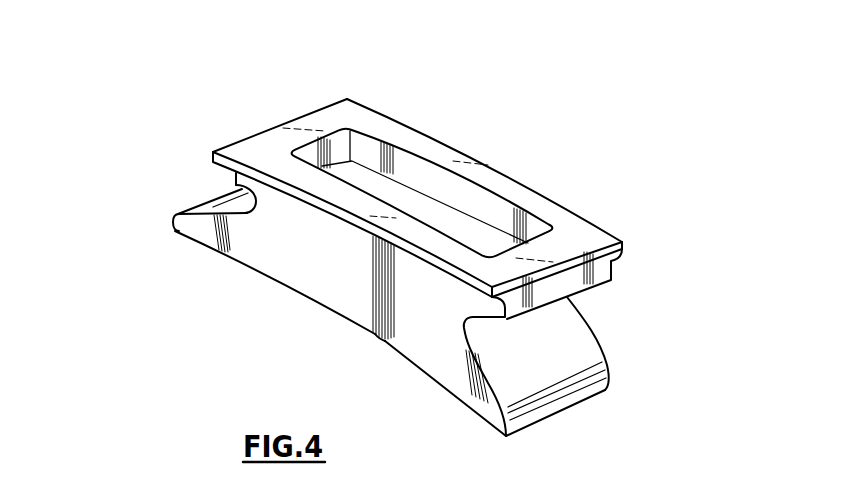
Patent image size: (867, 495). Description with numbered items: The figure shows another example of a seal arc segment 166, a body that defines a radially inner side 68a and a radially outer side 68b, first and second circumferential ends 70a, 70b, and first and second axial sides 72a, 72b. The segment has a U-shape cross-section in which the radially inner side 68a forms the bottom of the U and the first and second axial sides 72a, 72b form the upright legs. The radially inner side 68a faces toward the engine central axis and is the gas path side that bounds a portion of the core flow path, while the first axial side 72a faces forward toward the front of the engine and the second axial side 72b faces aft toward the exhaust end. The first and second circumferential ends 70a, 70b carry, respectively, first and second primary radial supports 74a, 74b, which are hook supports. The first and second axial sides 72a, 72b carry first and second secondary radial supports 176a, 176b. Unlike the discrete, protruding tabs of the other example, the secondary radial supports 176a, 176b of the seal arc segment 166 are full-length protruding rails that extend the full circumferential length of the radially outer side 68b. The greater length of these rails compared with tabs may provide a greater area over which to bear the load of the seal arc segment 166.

The seal arc segment 166 is at (597, 326).
The radially inner side 68a is at (407, 361).
The radially outer side 68b is at (568, 247).
The first circumferential end 70a is at (569, 345).
The second circumferential end 70b is at (203, 182).
The first axial side 72a is at (320, 264).
The second axial side 72b is at (558, 202).
The first primary radial support 74a is at (481, 323).
The second primary radial support 74b is at (231, 186).
The first secondary radial support 176a is at (368, 246).
The second secondary radial support 176b is at (495, 167).